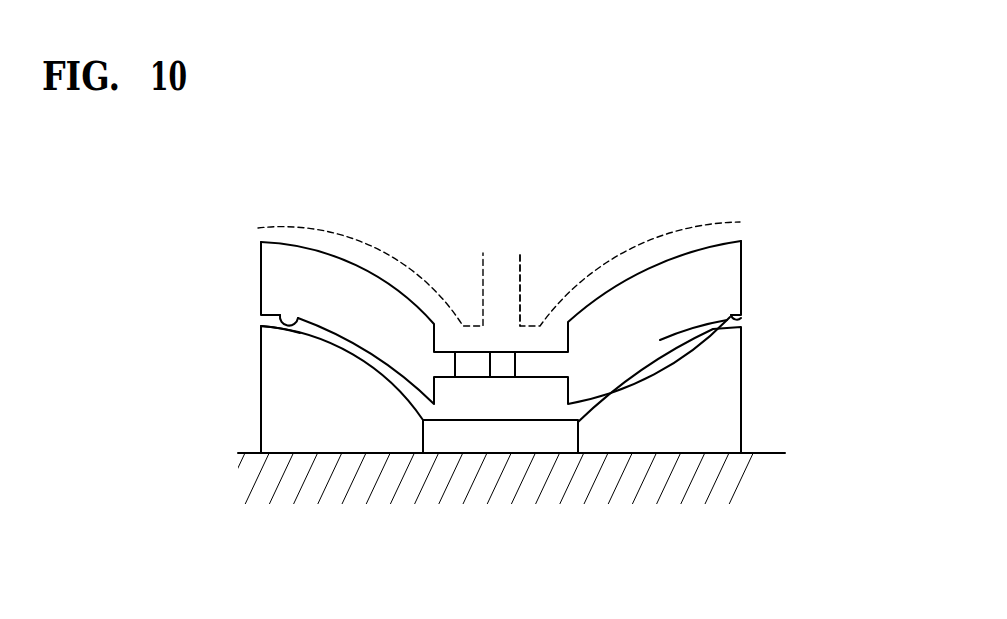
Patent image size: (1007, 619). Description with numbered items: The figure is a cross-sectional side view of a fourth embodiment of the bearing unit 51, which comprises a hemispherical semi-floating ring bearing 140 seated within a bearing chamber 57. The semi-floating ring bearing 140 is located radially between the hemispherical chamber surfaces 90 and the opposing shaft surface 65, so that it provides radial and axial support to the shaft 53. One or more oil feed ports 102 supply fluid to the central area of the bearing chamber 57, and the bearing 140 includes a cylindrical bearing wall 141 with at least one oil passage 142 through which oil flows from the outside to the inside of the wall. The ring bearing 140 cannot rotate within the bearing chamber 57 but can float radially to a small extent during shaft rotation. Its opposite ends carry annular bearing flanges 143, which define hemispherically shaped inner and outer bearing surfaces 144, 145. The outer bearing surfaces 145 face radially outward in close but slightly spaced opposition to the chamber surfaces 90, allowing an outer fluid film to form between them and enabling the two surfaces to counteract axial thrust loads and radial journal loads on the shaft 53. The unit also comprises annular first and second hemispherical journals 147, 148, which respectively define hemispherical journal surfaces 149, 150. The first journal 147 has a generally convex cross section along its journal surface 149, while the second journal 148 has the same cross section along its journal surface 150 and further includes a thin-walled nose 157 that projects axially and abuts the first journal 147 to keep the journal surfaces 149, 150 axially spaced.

The bearing unit 51 is at (149, 190).
The semi-floating ring bearing 140 is at (224, 224).
The annular bearing flange 143 is at (260, 275).
The inner bearing surface 144 is at (281, 314).
The outer bearing surface 145 is at (358, 258).
The cylindrical bearing wall 141 is at (475, 366).
The oil passage 142 is at (498, 351).
The chamber surface 90 is at (330, 232).
The oil feed port 102 is at (521, 278).
The bearing chamber 57 is at (218, 367).
The first hemispherical journal 147 is at (339, 416).
The first journal surface 149 is at (281, 327).
The thin-walled nose 157 is at (468, 440).
The second hemispherical journal 148 is at (640, 413).
The second journal surface 150 is at (684, 333).
The shaft surface 65 is at (762, 453).
The shaft 53 is at (685, 483).